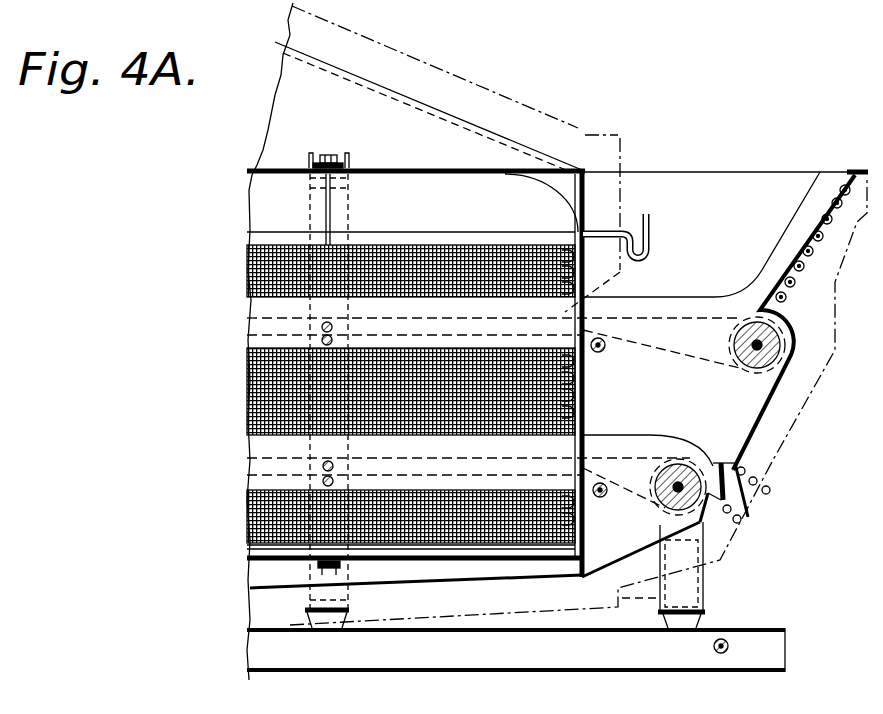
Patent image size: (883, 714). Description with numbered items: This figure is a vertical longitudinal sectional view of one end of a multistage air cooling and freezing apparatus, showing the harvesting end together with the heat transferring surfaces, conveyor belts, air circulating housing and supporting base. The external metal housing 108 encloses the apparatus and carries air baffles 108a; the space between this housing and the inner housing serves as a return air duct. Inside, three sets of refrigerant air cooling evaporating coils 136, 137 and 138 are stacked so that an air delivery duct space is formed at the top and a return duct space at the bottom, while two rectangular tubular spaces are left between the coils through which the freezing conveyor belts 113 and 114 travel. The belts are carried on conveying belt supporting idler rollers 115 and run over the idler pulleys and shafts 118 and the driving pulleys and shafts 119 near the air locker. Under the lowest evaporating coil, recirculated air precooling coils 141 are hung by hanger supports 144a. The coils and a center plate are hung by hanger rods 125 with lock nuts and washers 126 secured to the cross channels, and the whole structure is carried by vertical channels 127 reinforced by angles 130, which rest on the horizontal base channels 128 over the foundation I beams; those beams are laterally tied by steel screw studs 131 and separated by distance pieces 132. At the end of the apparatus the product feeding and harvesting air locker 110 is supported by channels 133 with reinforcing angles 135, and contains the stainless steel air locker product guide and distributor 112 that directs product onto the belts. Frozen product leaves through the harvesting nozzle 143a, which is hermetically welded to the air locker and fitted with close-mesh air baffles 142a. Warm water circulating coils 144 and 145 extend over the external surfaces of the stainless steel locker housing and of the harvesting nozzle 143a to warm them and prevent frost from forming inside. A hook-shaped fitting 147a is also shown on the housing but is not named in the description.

The external metal housing 108 is at (362, 72).
The air baffles 108a is at (547, 186).
The product feeding and harvesting air lockers 110 is at (831, 192).
The air locker product guides and distributor 112 is at (795, 220).
The freezing conveyor belts 113 is at (622, 318).
The freezing conveyor belts 114 is at (638, 458).
The conveying belt supporting idler rollers 115 is at (334, 339).
The idler pulleys and shafts 118 is at (772, 343).
The driving pulleys and shafts 119 is at (683, 478).
The hanger rods 125 is at (332, 216).
The lock nuts and washers 126 is at (333, 153).
The vertical channels 127 is at (308, 212).
The horizontal base channels 128 is at (368, 152).
The angles 130 is at (352, 188).
The steel screw studs 131 is at (735, 650).
The distance pieces 132 is at (728, 640).
The channels 133 is at (704, 592).
The reinforcing angles 135 is at (618, 596).
The refrigerant air cooling evaporating coils 136 is at (456, 248).
The refrigerant air cooling evaporating coils 137 is at (497, 345).
The refrigerant air cooling evaporating coils 138 is at (506, 488).
The recirculated air precooling coils 141 is at (472, 572).
The air baffles 142a is at (762, 498).
The frozen product harvesting nozzle 143a is at (762, 500).
The warm water circulating coils 144 is at (760, 488).
The hanger supports 144a is at (343, 572).
The warm water circulating coils 145 is at (815, 245).
The hook 147a is at (650, 230).